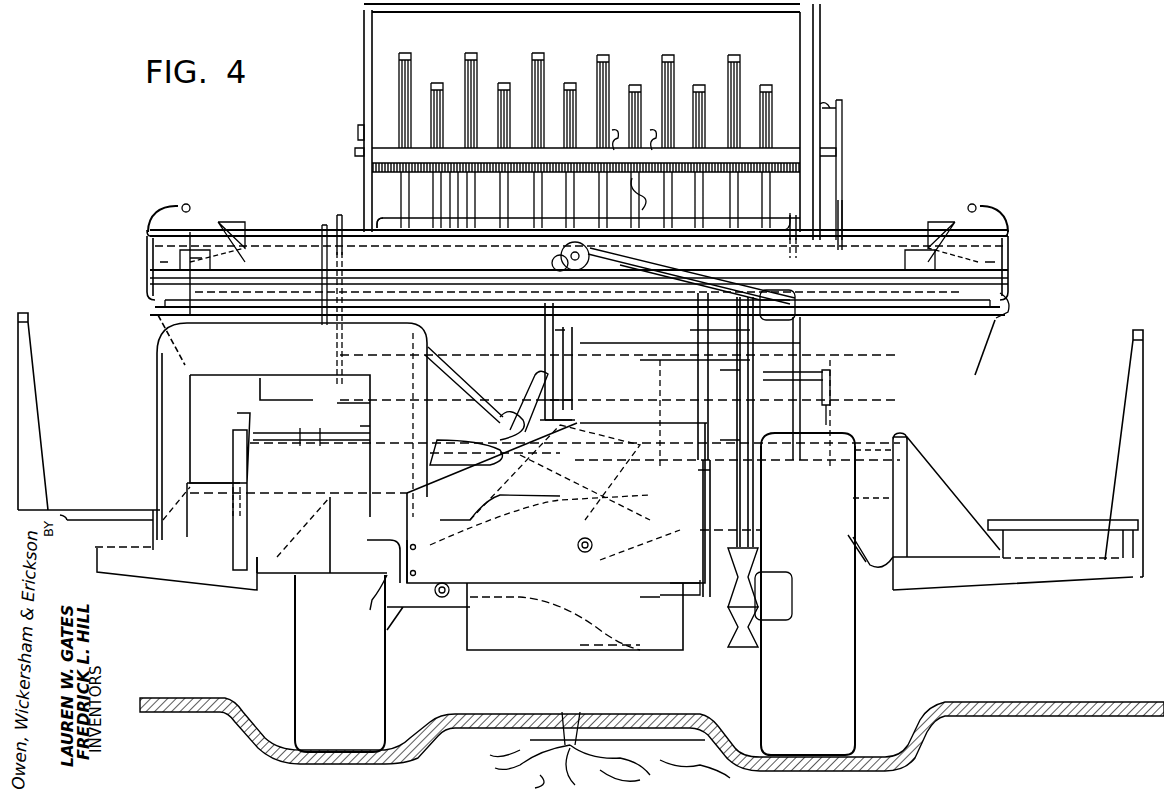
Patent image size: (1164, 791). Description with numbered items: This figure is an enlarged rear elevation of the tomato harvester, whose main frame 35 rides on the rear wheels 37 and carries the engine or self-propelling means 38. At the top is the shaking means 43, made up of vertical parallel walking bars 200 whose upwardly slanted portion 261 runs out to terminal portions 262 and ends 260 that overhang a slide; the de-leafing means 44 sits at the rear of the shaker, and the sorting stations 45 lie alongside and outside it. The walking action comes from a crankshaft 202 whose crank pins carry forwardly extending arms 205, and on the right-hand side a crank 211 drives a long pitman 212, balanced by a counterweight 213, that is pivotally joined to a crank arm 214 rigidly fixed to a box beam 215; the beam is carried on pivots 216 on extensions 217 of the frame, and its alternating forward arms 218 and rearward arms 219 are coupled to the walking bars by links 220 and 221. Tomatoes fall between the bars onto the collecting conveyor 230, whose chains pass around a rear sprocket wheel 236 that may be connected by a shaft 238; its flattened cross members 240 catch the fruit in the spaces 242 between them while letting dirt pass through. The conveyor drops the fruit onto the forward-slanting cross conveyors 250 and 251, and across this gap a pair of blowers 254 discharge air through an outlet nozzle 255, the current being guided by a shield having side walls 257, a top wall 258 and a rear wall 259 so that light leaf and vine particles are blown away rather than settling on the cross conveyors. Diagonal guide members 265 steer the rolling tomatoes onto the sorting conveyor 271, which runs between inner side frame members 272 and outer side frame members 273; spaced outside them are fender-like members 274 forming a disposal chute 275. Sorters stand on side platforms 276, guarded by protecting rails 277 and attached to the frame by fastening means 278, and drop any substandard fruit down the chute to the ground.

The main frame 35 is at (822, 58).
The rear wheels 37 is at (298, 704).
The engine or self-propelling means 38 is at (374, 584).
The shaking means 43 is at (391, 88).
The de-leafing means 44 is at (382, 206).
The sorting stations 45 is at (147, 208).
The walking bars 200 is at (432, 100).
The crankshaft 202 is at (822, 400).
The arms 205 is at (762, 430).
The crank 211 is at (828, 382).
The pitman 212 is at (843, 206).
The counterweight 213 is at (820, 418).
The crank arm 214 is at (842, 128).
The box beam 215 is at (700, 178).
The pivots 216 is at (356, 150).
The extensions 217 is at (362, 126).
The arms 218 is at (690, 190).
The arms 219 is at (639, 137).
The link 220 is at (598, 192).
The link 221 is at (648, 98).
The conveyor 230 is at (454, 226).
The rear sprocket wheel 236 is at (385, 220).
The shaft 238 is at (795, 240).
The cross members 240 is at (516, 228).
The spaces 242 is at (748, 230).
The cross conveyor 250 is at (322, 236).
The cross conveyor 251 is at (852, 243).
The blowers 254 is at (510, 341).
The outlet nozzle 255 is at (450, 262).
The side walls 257 is at (364, 30).
The top wall 258 is at (628, 14).
The rear wall 259 is at (752, 50).
The ends 260 is at (472, 95).
The upwardly slanted portion 261 is at (540, 92).
The terminal portions 262 is at (608, 96).
The diagonal guide members 265 is at (236, 220).
The sorting conveyor 271 is at (886, 280).
The side frame members 272 is at (862, 318).
The side frame members 273 is at (1012, 300).
The fender-like members 274 is at (185, 200).
The disposal chute 275 is at (180, 326).
The side platforms 276 is at (112, 506).
The protecting rails 277 is at (36, 392).
The fastening means 278 is at (230, 460).